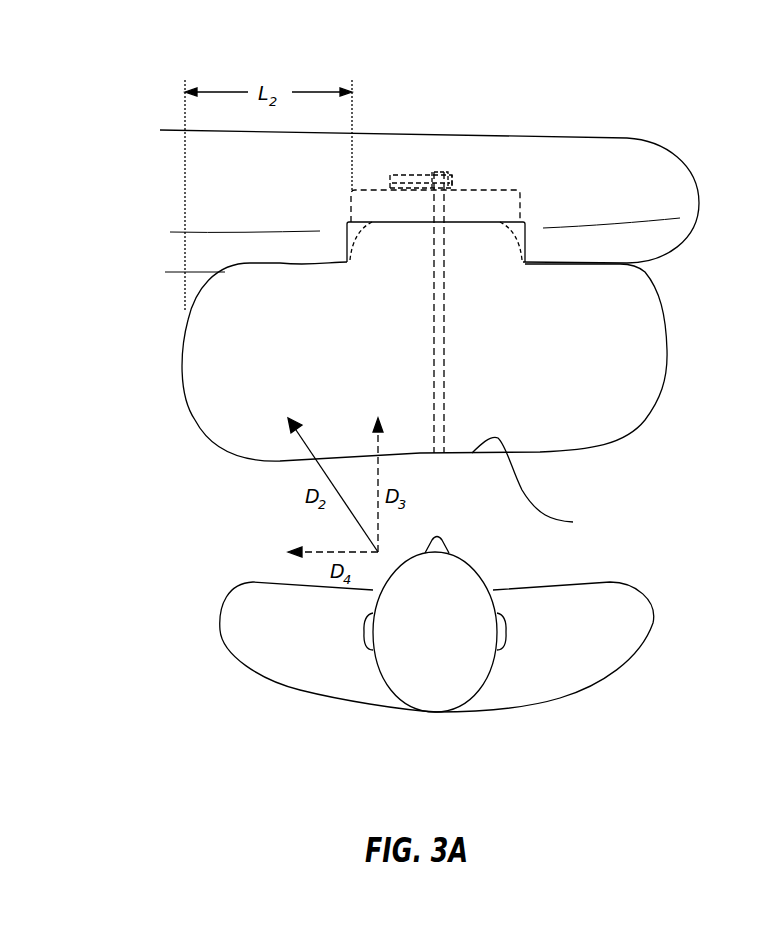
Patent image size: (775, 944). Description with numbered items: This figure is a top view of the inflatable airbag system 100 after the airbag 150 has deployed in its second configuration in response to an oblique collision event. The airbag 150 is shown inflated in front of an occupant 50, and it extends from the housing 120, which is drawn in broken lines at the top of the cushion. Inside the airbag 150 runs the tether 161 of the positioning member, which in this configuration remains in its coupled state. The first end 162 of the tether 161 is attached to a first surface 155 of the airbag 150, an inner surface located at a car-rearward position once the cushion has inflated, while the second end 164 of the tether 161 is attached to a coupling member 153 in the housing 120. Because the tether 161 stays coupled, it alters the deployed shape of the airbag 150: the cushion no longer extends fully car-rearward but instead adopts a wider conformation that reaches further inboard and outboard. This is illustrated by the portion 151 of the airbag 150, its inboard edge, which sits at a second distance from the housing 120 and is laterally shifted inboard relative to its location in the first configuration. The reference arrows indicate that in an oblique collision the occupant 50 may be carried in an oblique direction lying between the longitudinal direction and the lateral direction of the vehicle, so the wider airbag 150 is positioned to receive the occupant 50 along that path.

The inflatable airbag system 100 is at (408, 162).
The housing 120 is at (512, 188).
The airbag 150 is at (633, 368).
The portion 151 is at (183, 367).
The coupling member 153 is at (415, 173).
The first surface 155 is at (543, 486).
The tether 161 is at (444, 390).
The first end 162 is at (444, 430).
The second end 164 is at (460, 188).
The occupant 50 is at (437, 625).